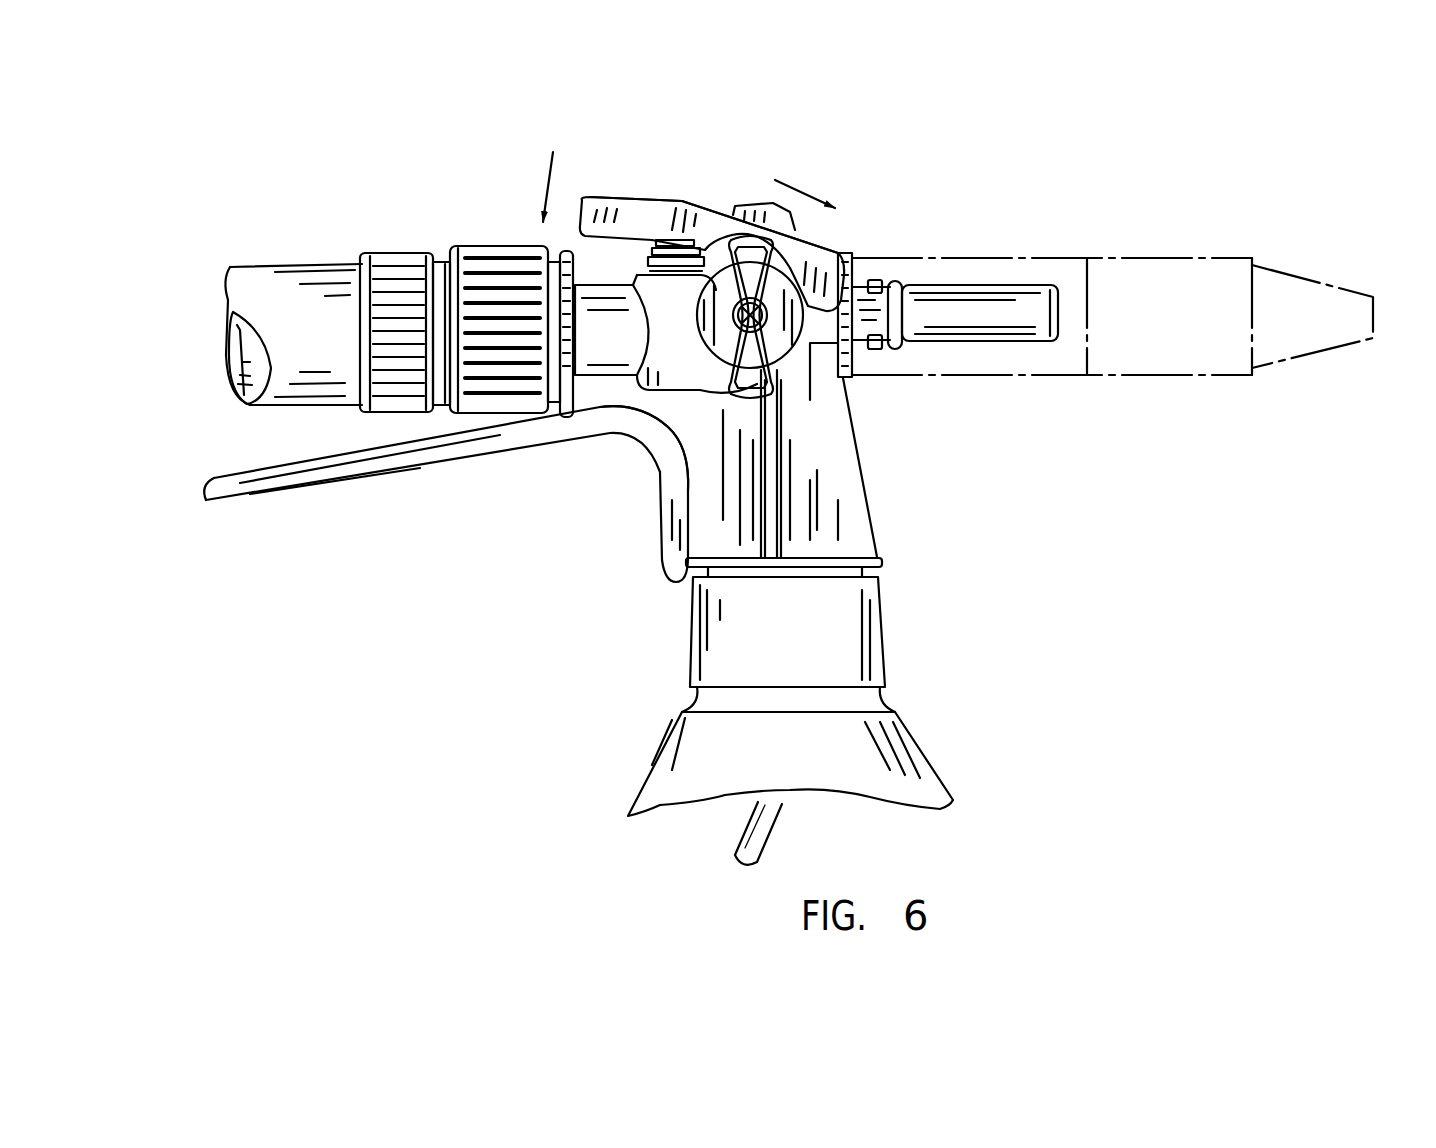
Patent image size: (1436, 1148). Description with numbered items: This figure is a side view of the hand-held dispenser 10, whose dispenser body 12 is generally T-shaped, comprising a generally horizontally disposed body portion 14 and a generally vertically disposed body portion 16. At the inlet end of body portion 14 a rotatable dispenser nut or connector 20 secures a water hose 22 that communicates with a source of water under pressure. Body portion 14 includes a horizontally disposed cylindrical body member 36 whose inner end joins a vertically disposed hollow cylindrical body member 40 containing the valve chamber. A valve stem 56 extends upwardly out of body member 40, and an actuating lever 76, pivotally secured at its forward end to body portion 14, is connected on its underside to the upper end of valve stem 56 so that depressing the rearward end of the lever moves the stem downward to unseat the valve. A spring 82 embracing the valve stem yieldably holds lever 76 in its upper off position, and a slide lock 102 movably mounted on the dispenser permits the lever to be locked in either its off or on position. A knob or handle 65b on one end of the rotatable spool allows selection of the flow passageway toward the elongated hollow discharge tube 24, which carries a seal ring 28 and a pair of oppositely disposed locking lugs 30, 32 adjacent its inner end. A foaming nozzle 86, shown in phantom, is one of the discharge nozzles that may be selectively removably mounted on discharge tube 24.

The dispenser 10 is at (871, 192).
The dispenser body 12 is at (657, 489).
The horizontally disposed body portion 14 is at (633, 402).
The vertically disposed body portion 16 is at (858, 518).
The dispenser nut or connector 20 is at (497, 258).
The water hose 22 is at (320, 264).
The discharge tube 24 is at (976, 298).
The seal ring 28 is at (900, 312).
The locking lug 30 is at (876, 280).
The locking lug 32 is at (876, 350).
The cylindrical body member 36 is at (614, 346).
The hollow cylindrical body member 40 is at (686, 378).
The valve stem 56 is at (648, 255).
The handle or knob 65b is at (757, 388).
The actuating lever 76 is at (655, 194).
The spring 82 is at (660, 240).
The foaming nozzle 86 is at (1153, 362).
The slide lock 102 is at (760, 206).